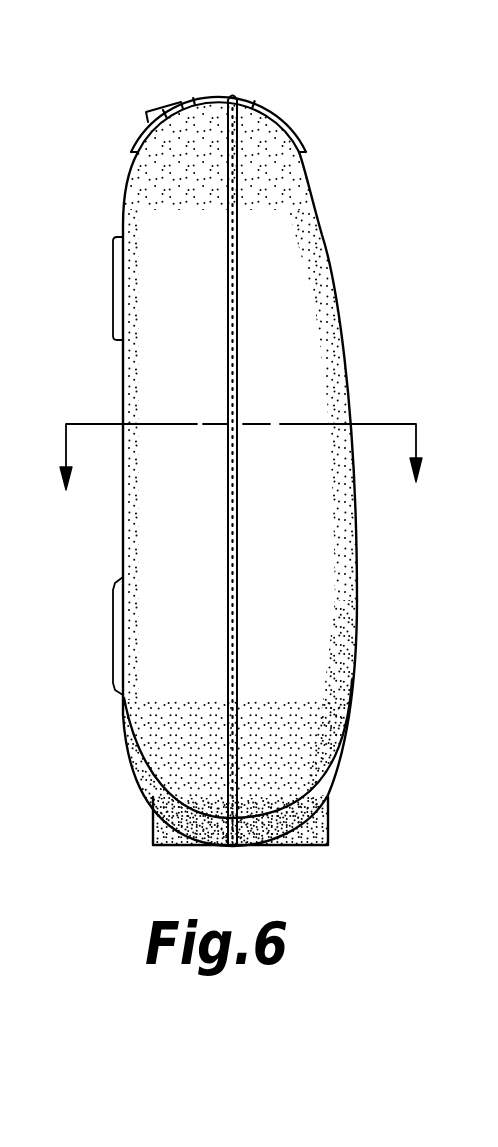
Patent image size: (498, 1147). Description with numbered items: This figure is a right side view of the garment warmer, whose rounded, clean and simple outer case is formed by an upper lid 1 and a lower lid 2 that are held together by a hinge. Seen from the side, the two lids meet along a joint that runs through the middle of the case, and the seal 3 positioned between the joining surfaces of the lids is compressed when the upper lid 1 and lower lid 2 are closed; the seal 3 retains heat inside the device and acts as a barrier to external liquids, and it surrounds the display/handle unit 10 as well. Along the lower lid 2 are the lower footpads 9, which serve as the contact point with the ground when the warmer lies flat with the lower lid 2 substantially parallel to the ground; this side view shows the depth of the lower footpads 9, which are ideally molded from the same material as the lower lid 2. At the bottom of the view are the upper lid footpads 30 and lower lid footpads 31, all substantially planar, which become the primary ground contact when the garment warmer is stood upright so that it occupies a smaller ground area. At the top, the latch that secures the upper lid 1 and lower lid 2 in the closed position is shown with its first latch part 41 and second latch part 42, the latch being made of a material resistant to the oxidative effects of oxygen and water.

The upper lid 1 is at (283, 217).
The lower lid 2 is at (165, 205).
The seal 3 is at (233, 305).
The lower footpads 9 is at (113, 282).
The display/handle unit 10 is at (238, 487).
The upper lid footpads 30 is at (317, 847).
The lower lid footpads 31 is at (168, 833).
The first latch part 41 is at (247, 100).
The second latch part 42 is at (145, 115).